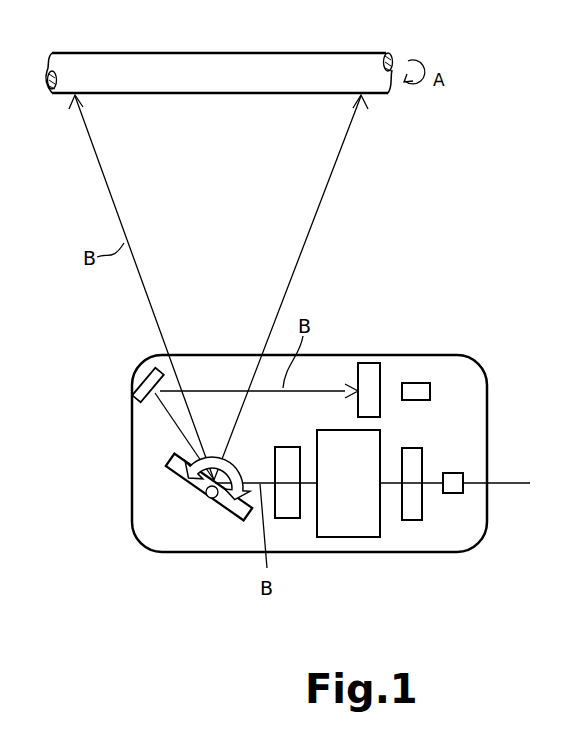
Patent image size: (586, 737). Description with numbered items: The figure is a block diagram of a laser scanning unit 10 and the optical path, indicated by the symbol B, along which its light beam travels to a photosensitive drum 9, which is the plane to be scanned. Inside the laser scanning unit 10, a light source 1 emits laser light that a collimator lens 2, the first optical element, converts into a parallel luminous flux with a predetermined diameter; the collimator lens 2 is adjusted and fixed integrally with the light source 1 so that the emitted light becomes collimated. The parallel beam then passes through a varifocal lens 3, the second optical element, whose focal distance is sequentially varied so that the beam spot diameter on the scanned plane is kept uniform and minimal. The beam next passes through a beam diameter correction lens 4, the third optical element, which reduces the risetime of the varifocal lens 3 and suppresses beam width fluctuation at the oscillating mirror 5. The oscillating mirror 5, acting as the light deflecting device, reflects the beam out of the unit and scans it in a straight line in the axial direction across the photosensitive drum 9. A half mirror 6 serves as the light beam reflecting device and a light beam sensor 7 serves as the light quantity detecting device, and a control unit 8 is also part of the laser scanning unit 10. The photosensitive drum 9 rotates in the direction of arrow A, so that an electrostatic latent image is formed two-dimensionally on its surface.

The light source 1 is at (464, 476).
The collimator lens 2 is at (423, 448).
The varifocal lens 3 is at (372, 523).
The beam diameter correction lens 4 is at (284, 518).
The oscillating mirror 5 is at (200, 505).
The half mirror 6 is at (142, 385).
The light beam sensor 7 is at (373, 364).
The control unit 8 is at (430, 384).
The photosensitive drum 9 is at (190, 55).
The laser scanning unit 10 is at (325, 355).